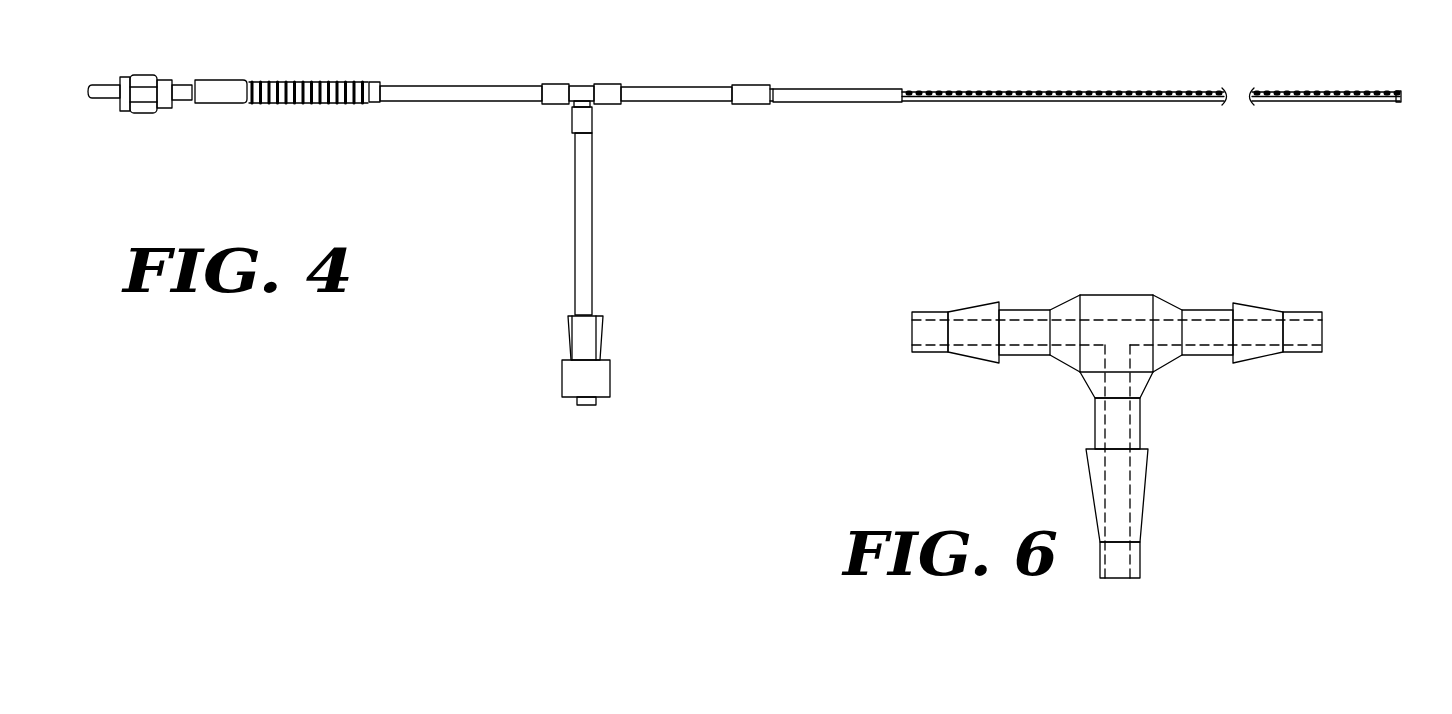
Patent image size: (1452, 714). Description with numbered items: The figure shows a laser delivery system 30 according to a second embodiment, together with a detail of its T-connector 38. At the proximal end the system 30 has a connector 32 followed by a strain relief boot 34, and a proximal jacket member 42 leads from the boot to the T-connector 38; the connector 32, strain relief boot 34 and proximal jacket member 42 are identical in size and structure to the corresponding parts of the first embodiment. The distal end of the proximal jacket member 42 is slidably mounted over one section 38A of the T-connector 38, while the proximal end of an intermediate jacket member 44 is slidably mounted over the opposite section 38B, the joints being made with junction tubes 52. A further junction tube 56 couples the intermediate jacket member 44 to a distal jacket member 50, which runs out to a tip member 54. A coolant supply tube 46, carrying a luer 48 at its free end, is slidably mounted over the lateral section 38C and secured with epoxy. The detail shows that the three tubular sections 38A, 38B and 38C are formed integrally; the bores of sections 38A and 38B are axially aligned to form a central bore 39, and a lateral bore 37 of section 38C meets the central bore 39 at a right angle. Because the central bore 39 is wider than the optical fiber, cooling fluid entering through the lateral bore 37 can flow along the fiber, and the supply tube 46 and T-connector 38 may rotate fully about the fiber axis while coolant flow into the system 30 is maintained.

In FIG. 4, the laser delivery system 30 is at (1012, 64).
In FIG. 4, the connector 32 is at (143, 75).
In FIG. 4, the strain relief boot 34 is at (223, 82).
In FIG. 6, the lateral bore 37 is at (1125, 572).
In FIG. 4, the T-connector 38 is at (585, 86).
In FIG. 6, the T-connector 38 is at (1186, 396).
In FIG. 6, the tubular section 38A is at (1018, 310).
In FIG. 6, the tubular section 38B is at (1263, 310).
In FIG. 6, the tubular section 38C is at (1097, 475).
In FIG. 6, the central bore 39 is at (1316, 345).
In FIG. 4, the proximal jacket member 42 is at (446, 86).
In FIG. 4, the intermediate jacket member 44 is at (697, 97).
In FIG. 4, the coolant supply tube 46 is at (588, 237).
In FIG. 4, the luer 48 is at (584, 330).
In FIG. 4, the distal jacket member 50 is at (1120, 101).
In FIG. 4, the junction tubes 52 is at (555, 84).
In FIG. 4, the tip member 54 is at (1400, 91).
In FIG. 4, the junction tube 56 is at (812, 90).